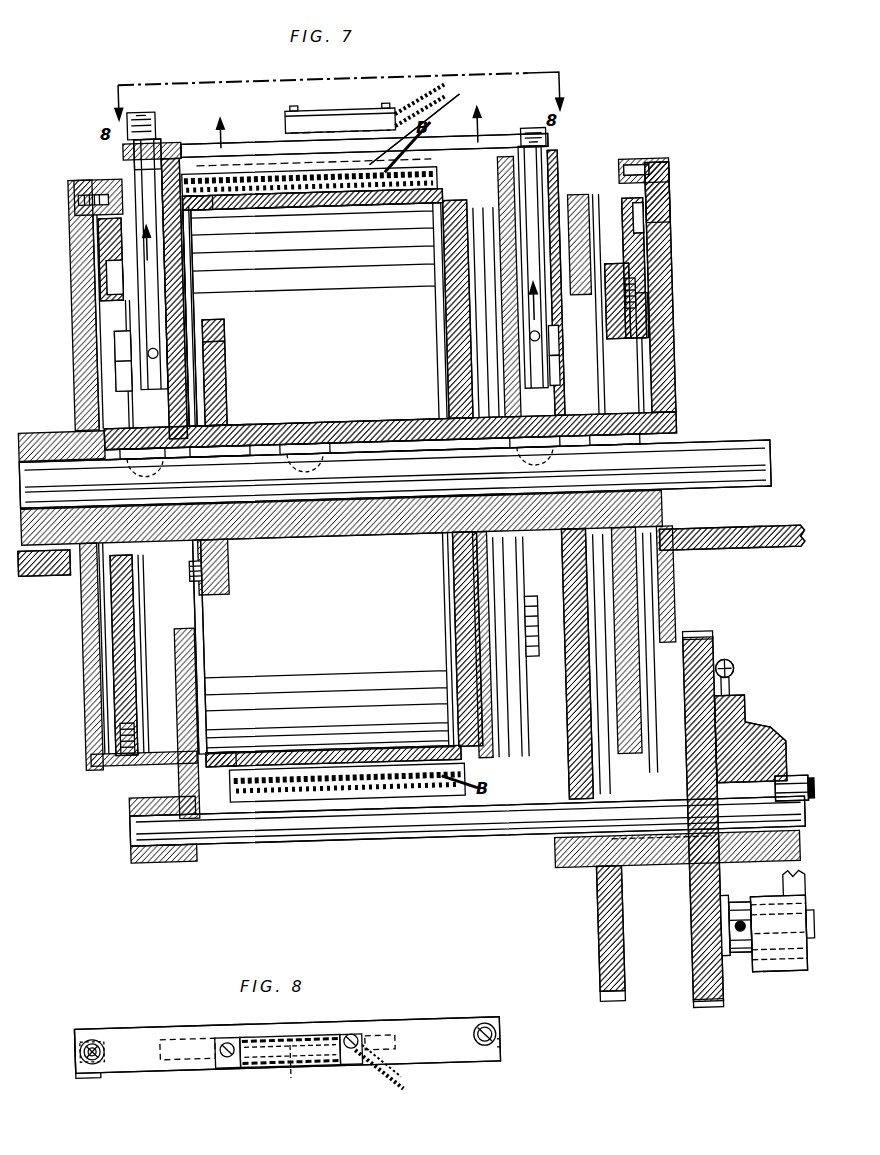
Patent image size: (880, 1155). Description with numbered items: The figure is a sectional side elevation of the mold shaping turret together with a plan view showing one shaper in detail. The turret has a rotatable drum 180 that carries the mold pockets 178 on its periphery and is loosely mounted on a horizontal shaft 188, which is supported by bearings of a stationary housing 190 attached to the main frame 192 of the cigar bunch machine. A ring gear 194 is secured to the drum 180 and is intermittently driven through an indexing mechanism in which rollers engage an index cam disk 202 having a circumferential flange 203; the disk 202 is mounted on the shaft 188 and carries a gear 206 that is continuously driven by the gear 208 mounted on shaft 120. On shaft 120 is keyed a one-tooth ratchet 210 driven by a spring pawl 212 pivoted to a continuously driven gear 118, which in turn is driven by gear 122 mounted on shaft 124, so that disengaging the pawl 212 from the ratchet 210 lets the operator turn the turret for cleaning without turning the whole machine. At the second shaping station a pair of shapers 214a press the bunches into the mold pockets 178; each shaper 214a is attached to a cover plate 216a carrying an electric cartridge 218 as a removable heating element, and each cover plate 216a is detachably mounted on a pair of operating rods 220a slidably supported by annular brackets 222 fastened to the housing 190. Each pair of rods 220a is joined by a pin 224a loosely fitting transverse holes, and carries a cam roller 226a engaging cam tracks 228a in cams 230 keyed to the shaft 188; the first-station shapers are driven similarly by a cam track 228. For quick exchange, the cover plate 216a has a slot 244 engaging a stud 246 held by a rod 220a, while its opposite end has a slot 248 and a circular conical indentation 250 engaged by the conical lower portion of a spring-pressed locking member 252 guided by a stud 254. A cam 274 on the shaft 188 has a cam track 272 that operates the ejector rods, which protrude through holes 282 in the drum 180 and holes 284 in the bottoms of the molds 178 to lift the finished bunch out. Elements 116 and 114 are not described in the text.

In FIG. 7, the stud 254 is at (138, 112).
In FIG. 8, the stud 254 is at (88, 1042).
In FIG. 7, the spring-pressed locking member 252 is at (158, 135).
In FIG. 8, the spring-pressed locking member 252 is at (106, 1060).
In FIG. 7, the circular conical indentation 250 is at (168, 150).
In FIG. 8, the circular conical indentation 250 is at (100, 1045).
In FIG. 7, the cover plate 216a is at (207, 148).
In FIG. 8, the cover plate 216a is at (424, 1035).
In FIG. 7, the electric cartridge 218 is at (398, 112).
In FIG. 8, the electric cartridge 218 is at (309, 1066).
In FIG. 7, the shaper 214a is at (429, 123).
In FIG. 8, the shaper 214a is at (375, 1040).
In FIG. 7, the stud 246 is at (533, 130).
In FIG. 8, the stud 246 is at (486, 1052).
In FIG. 7, the operating rod 220a is at (135, 185).
In FIG. 7, the annular bracket 222 is at (90, 190).
In FIG. 7, the cam 230 is at (112, 236).
In FIG. 7, the cam track 228 is at (118, 268).
In FIG. 7, the hole 284 is at (212, 205).
In FIG. 7, the rotatable drum 180 is at (480, 230).
In FIG. 7, the circumferential flange 203 is at (670, 222).
In FIG. 7, the gear 206 is at (602, 290).
In FIG. 7, the index cam disk 202 is at (660, 246).
In FIG. 7, the stationary housing 190 is at (668, 272).
In FIG. 7, the mold pocket 178 is at (200, 215).
In FIG. 7, the hole 282 is at (205, 215).
In FIG. 7, the cam track 272 is at (216, 320).
In FIG. 7, the pin 224a is at (160, 348).
In FIG. 7, the cam 274 is at (218, 398).
In FIG. 7, the ring gear 194 is at (460, 262).
In FIG. 7, the cam track 228a is at (560, 335).
In FIG. 7, the cam roller 226a is at (555, 375).
In FIG. 7, the horizontal shaft 188 is at (668, 465).
In FIG. 7, the main frame 192 is at (722, 545).
In FIG. 7, the gear 118 is at (708, 636).
In FIG. 7, the spring pawl 212 is at (735, 702).
In FIG. 7, the one-tooth ratchet 210 is at (740, 735).
In FIG. 7, the shaft end 116 is at (808, 785).
In FIG. 7, the column 114 is at (596, 768).
In FIG. 7, the shaft 120 is at (385, 835).
In FIG. 7, the gear 208 is at (600, 985).
In FIG. 7, the gear 122 is at (730, 965).
In FIG. 7, the shaft 124 is at (808, 945).
In FIG. 8, the slot 248 is at (88, 1062).
In FIG. 8, the slot 244 is at (498, 1040).